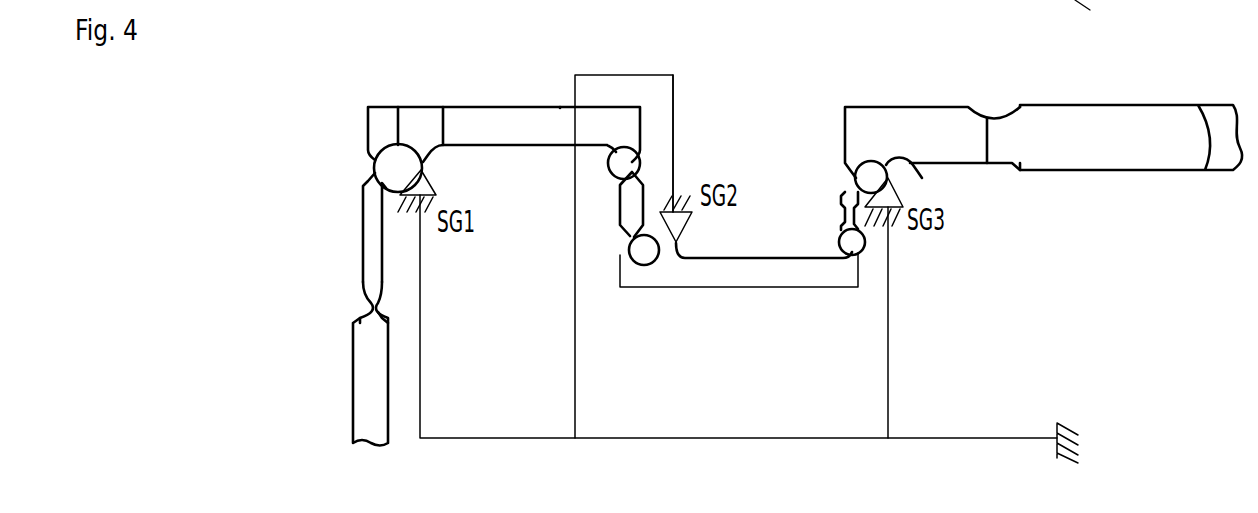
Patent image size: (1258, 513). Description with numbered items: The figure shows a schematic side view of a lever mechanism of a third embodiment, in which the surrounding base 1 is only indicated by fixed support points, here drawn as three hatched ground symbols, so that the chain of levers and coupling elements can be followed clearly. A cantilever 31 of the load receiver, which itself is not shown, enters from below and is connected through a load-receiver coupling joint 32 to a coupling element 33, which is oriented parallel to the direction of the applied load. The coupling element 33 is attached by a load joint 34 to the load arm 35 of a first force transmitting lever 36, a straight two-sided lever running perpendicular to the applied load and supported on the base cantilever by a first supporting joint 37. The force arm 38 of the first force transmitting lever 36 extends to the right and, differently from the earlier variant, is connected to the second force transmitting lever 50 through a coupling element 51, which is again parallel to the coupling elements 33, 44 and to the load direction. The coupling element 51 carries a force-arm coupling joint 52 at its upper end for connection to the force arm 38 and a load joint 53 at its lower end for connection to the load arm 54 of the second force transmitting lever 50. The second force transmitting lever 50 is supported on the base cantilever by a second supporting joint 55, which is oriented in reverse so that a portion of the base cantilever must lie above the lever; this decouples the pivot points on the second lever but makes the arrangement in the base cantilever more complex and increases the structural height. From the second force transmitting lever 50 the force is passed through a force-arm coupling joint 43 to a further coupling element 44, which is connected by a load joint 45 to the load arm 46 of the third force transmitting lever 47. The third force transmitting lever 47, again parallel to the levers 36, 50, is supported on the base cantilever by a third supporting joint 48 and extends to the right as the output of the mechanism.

The base 1 is at (1067, 427).
The cantilever 31 is at (372, 388).
The load-receiver coupling joint 32 is at (373, 303).
The coupling element 33 is at (373, 217).
The load joint 34 is at (375, 168).
The load arm 35 is at (385, 132).
The first force transmitting lever 36 is at (502, 103).
The first supporting joint 37 is at (450, 155).
The force arm 38 is at (535, 128).
The force-arm coupling joint 43 is at (857, 245).
The coupling element 44 is at (843, 225).
The load joint 45 is at (855, 175).
The load arm 46 is at (887, 140).
The third force transmitting lever 47 is at (973, 145).
The third supporting joint 48 is at (913, 177).
The second force transmitting lever 50 is at (720, 297).
The coupling element 51 is at (627, 205).
The force-arm coupling joint 52 is at (628, 170).
The load joint 53 is at (657, 262).
The load arm 54 is at (630, 273).
The second supporting joint 55 is at (677, 242).